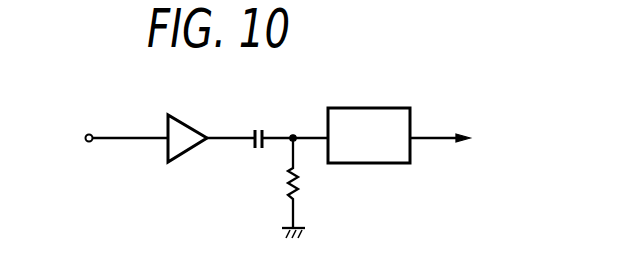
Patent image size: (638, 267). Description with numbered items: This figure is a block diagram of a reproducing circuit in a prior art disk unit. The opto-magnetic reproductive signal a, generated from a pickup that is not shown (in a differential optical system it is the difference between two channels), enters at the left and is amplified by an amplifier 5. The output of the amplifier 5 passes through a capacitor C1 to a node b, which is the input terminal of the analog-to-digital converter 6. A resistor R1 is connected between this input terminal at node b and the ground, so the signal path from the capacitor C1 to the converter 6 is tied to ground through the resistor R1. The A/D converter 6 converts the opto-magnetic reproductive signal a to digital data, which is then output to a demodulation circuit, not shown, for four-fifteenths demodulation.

The opto-magnetic reproductive signal a is at (116, 138).
The amplifier 5 is at (188, 125).
The capacitor C1 is at (262, 127).
The node b is at (308, 129).
The A/D converter 6 is at (412, 121).
The resistor R1 is at (297, 184).